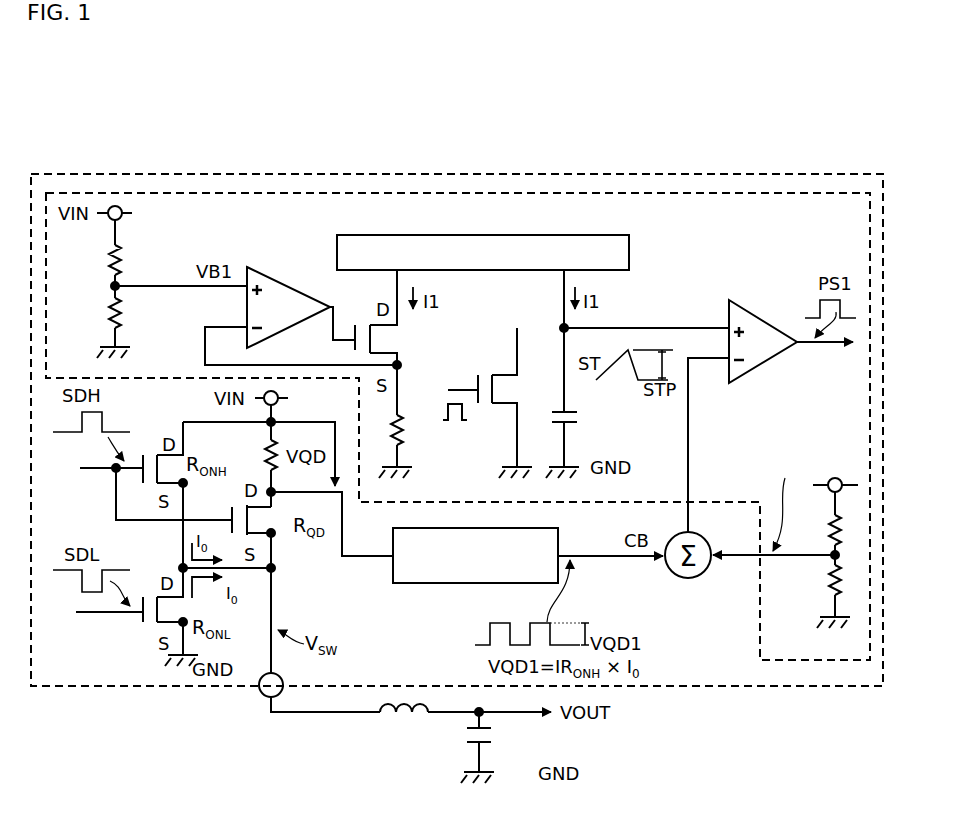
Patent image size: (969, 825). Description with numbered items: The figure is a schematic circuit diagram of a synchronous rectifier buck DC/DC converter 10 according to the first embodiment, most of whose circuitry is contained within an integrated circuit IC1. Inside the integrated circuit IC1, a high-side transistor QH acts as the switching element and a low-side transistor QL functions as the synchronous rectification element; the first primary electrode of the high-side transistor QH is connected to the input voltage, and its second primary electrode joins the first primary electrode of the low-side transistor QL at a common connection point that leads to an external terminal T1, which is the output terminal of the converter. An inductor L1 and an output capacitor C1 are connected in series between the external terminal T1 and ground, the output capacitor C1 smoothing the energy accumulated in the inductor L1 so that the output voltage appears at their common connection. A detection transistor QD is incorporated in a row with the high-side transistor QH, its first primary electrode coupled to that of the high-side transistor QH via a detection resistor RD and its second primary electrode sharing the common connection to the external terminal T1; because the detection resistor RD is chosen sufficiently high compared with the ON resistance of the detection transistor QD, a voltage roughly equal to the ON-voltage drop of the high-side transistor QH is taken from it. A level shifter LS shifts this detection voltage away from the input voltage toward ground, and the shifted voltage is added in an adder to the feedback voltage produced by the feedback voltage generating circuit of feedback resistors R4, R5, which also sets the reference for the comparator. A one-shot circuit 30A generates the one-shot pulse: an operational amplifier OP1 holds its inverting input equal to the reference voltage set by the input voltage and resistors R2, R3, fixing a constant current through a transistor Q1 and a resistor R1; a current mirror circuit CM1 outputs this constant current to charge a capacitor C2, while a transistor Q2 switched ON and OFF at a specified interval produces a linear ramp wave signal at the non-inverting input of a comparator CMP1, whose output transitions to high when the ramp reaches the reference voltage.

The DC/DC converter 10 is at (471, 166).
The integrated circuit IC1 is at (153, 688).
The one-shot circuit 30A is at (773, 553).
The resistor R1 is at (411, 430).
The resistor R2 is at (96, 260).
The resistor R3 is at (96, 314).
The feedback resistor R4 is at (820, 533).
The feedback resistor R5 is at (820, 583).
The detection resistor RD is at (250, 454).
The operational amplifier OP1 is at (288, 302).
The current mirror circuit CM1 is at (483, 240).
The transistor Q1 is at (390, 317).
The transistor Q2 is at (487, 397).
The capacitor C2 is at (577, 397).
The comparator CMP1 is at (763, 329).
The high-side transistor QH is at (156, 451).
The low-side transistor QL is at (150, 632).
The detection transistor QD is at (277, 536).
The level shifter LS is at (475, 568).
The external terminal T1 is at (262, 697).
The inductor L1 is at (404, 727).
The output capacitor C1 is at (495, 742).